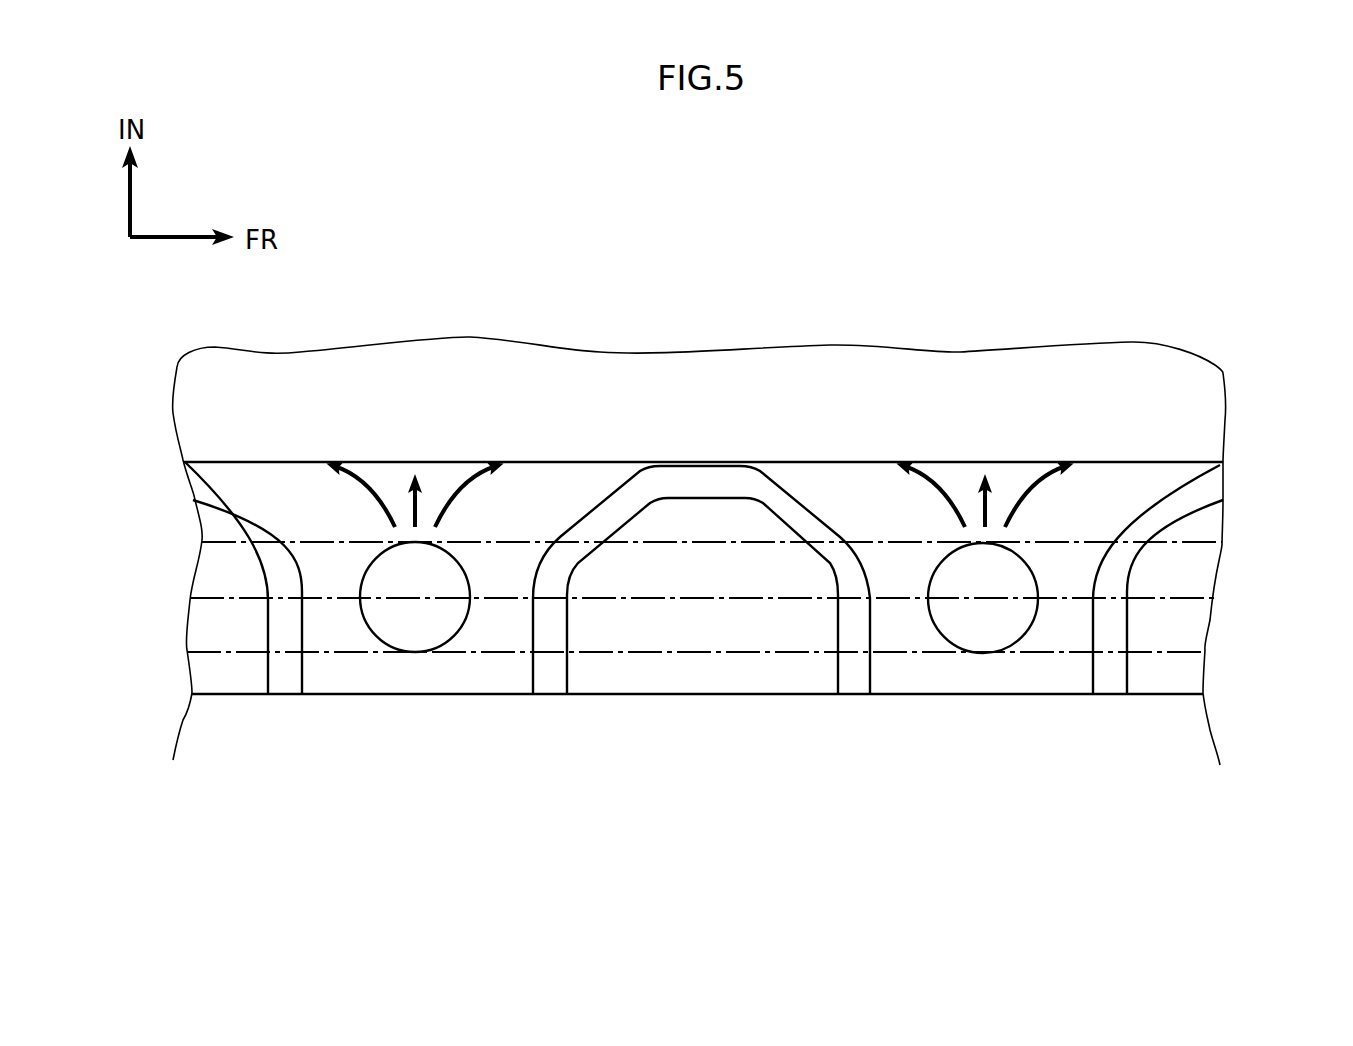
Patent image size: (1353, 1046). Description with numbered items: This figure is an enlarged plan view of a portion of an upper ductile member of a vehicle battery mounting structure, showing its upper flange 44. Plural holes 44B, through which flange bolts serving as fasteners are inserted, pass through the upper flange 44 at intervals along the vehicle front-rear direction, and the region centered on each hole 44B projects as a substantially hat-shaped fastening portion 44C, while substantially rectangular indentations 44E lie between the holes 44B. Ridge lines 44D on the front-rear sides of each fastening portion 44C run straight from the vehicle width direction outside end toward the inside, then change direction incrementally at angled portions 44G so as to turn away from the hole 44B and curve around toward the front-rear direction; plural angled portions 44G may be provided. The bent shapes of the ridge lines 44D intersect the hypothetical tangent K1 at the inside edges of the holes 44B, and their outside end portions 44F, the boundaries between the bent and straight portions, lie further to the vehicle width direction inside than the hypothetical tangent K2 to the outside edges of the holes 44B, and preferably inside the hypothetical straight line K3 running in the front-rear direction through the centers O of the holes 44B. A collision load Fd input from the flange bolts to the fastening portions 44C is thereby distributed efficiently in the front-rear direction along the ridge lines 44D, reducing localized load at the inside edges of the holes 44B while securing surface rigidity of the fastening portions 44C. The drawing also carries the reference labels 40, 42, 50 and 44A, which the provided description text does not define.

The vehicle body member 40 is at (703, 493).
The panel 42 is at (978, 298).
The upper flange 44 is at (703, 592).
The reinforcement member 50 is at (238, 694).
The flange portion 44A is at (200, 422).
The hole 44B is at (418, 652).
The fastening portion 44C is at (433, 683).
The ridge line 44D is at (533, 668).
The indentation 44E is at (722, 680).
The vehicle width direction outside end portion 44F is at (533, 587).
The angled portion 44G is at (597, 502).
The hypothetical tangent K1 is at (1173, 545).
The hypothetical tangent K2 is at (1183, 654).
The hypothetical straight line K3 is at (1175, 598).
The collision load Fd is at (378, 502).
The center O is at (415, 597).